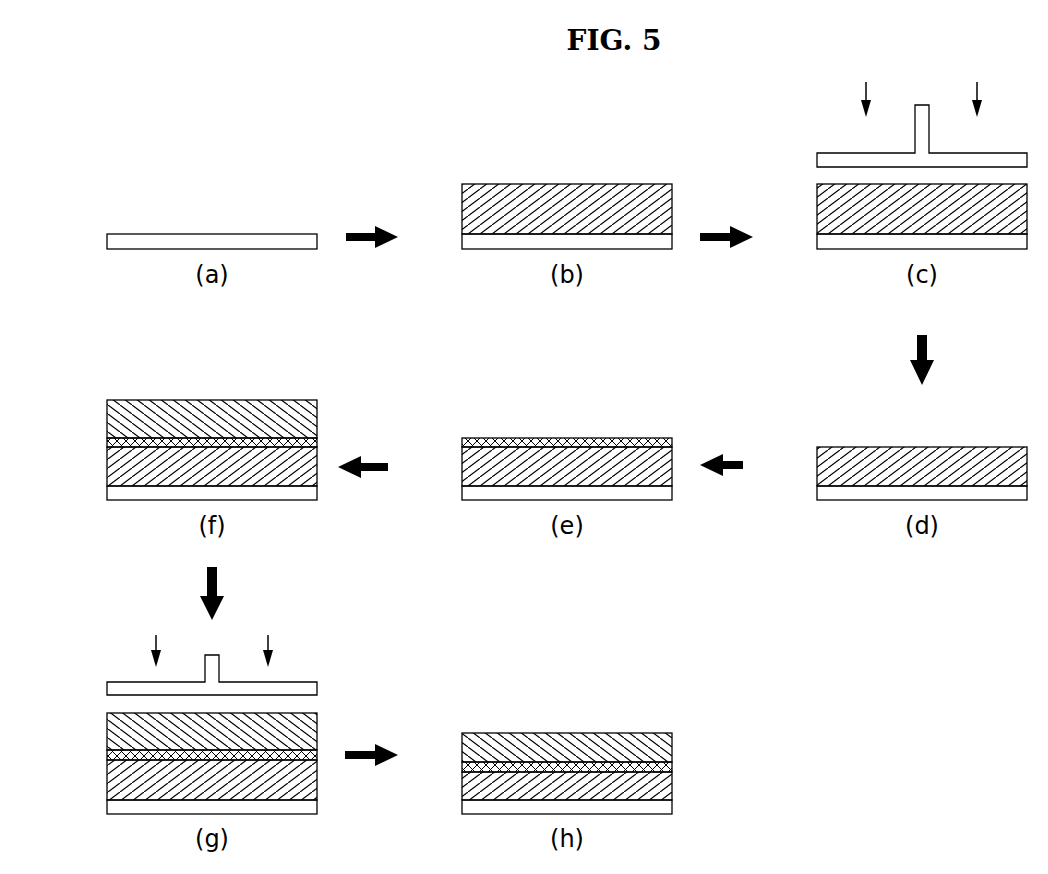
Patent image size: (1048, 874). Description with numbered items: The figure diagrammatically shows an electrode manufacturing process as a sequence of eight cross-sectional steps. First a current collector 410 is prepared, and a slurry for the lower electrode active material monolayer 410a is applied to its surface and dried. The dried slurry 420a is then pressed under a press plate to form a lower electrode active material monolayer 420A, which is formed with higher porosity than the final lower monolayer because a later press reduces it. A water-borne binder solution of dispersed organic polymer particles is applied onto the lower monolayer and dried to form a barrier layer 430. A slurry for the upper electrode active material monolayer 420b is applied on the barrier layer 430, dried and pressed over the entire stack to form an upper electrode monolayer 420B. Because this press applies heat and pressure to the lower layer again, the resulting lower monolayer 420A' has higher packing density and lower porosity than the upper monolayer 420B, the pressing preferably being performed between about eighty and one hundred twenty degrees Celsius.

The substrate 410 is at (107, 242).
The first resin coating layer 410a is at (462, 216).
The first resin layer under press 420a is at (817, 216).
The first pressed pattern layer 420A is at (533, 623).
The intermediate layer 430 is at (462, 443).
The second resin layer 420b is at (107, 419).
The second pressed pattern layer 420B is at (462, 746).
The modified first pattern layer 420A' is at (531, 785).